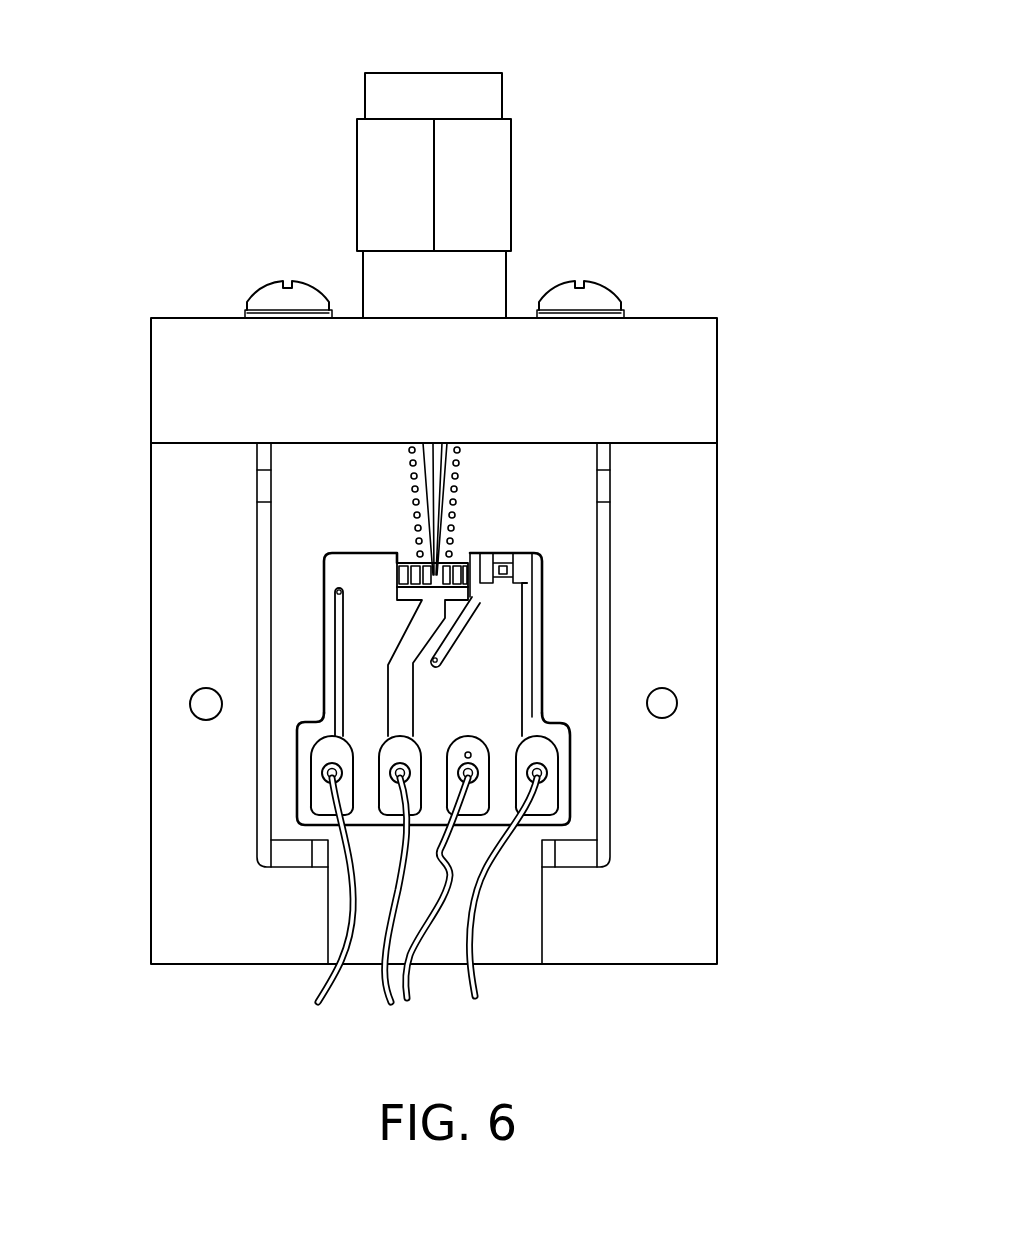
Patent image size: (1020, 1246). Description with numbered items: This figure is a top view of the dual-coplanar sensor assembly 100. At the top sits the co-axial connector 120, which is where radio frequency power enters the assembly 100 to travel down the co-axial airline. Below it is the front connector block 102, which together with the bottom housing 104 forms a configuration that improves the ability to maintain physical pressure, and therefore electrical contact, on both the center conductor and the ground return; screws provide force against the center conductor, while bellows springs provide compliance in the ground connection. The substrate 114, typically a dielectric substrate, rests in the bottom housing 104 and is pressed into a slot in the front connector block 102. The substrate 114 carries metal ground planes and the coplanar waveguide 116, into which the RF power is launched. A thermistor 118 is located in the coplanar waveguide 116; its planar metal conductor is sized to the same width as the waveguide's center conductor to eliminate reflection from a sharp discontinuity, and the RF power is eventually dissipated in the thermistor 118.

The dual-coplanar sensor assembly 100 is at (658, 134).
The front connector block 102 is at (688, 389).
The bottom housing 104 is at (683, 779).
The substrate 114 is at (294, 632).
The coplanar waveguide 116 is at (437, 572).
The thermistor 118 is at (443, 560).
The co-axial connector 120 is at (483, 93).